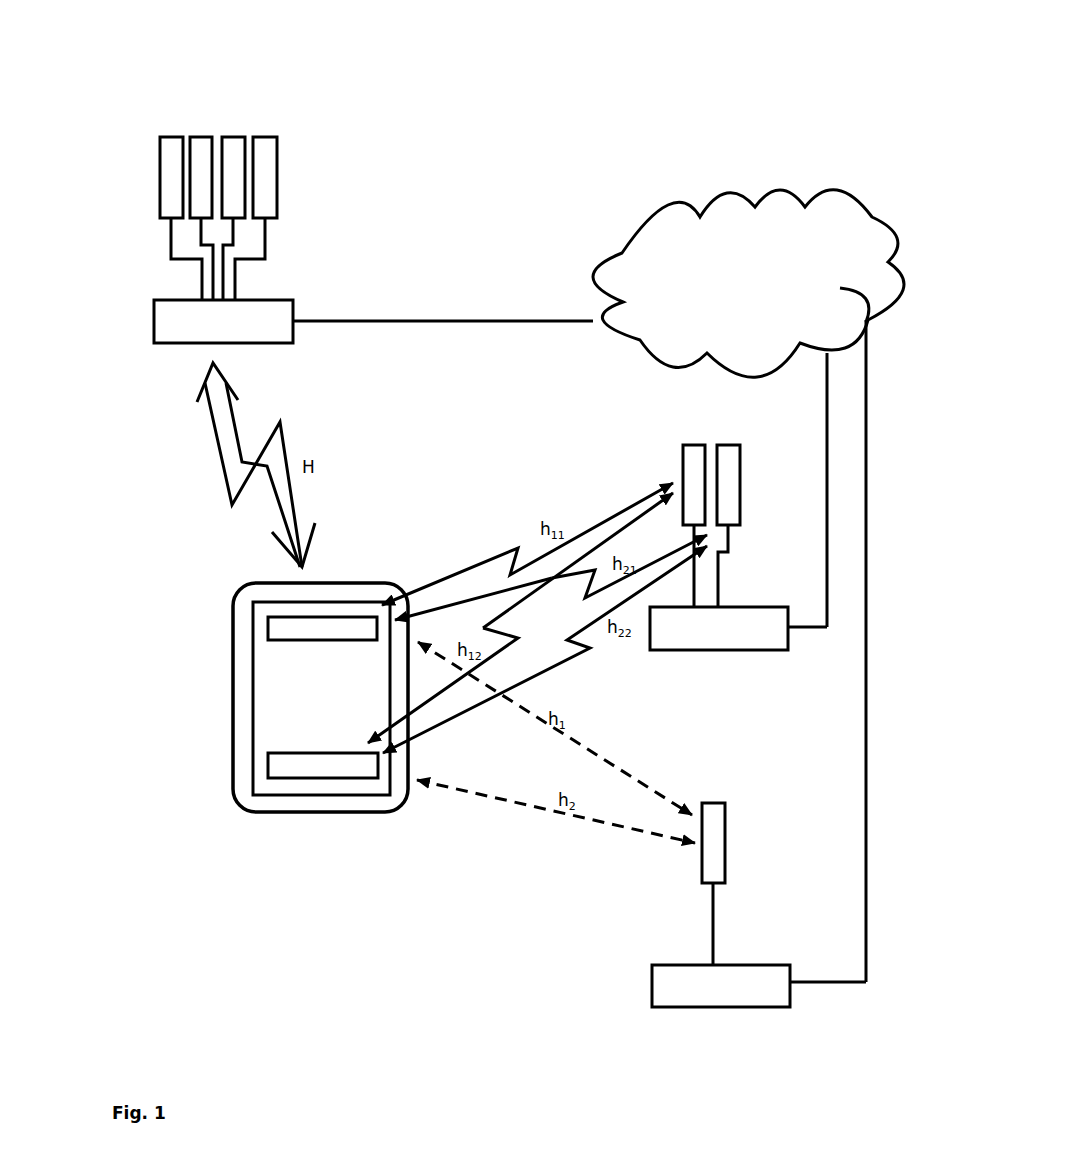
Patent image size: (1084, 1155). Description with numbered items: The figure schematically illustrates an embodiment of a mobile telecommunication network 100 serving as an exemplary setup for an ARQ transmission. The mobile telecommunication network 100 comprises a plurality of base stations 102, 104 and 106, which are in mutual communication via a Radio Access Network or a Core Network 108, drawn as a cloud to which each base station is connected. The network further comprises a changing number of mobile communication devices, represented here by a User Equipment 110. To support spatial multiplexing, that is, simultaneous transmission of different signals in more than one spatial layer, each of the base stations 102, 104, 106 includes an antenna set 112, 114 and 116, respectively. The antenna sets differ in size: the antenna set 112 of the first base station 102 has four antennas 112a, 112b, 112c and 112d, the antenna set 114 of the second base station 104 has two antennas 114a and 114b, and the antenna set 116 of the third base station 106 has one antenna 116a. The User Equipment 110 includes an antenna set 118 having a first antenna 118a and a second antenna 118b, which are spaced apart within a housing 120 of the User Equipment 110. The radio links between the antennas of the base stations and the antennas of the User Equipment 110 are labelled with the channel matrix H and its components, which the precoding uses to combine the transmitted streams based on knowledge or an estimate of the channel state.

The mobile telecommunication network 100 is at (142, 37).
The base station 102 is at (331, 171).
The base station 104 is at (703, 553).
The base station 106 is at (794, 878).
The Core Network 108 is at (718, 190).
The User Equipment 110 is at (299, 700).
The antenna set 112 is at (240, 109).
The antenna 112a is at (172, 137).
The antenna 112b is at (200, 137).
The antenna 112c is at (232, 137).
The antenna 112d is at (263, 137).
The antenna set 114 is at (677, 453).
The antenna 114a is at (693, 445).
The antenna 114b is at (728, 445).
The antenna set 116 is at (762, 816).
The antenna 116a is at (715, 803).
The antenna set 118 is at (267, 743).
The first antenna 118a is at (300, 630).
The second antenna 118b is at (287, 767).
The housing 120 is at (393, 810).